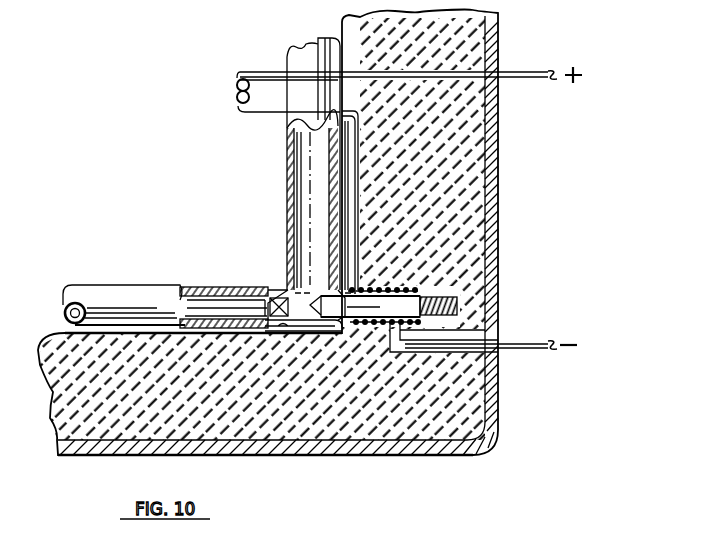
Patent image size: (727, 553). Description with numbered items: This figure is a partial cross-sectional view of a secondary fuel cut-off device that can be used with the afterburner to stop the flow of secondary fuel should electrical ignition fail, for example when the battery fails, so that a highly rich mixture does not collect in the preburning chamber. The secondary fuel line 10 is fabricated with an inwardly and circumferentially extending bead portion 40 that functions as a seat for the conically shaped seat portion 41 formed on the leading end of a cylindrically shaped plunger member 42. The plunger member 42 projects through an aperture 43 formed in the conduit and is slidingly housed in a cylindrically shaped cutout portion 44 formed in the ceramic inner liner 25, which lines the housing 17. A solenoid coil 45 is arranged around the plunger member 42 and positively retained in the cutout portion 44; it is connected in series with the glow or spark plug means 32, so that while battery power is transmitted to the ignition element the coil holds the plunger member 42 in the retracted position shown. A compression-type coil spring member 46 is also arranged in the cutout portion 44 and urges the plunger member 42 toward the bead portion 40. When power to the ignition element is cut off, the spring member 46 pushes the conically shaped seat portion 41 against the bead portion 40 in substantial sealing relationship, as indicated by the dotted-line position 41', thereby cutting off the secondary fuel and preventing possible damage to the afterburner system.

The secondary fuel line 10 is at (107, 292).
The housing 17 is at (499, 198).
The ceramic inner liner 25 is at (118, 417).
The glow or spark plug means 32 is at (240, 82).
The bead portion 40 is at (222, 287).
The conically shaped seat portion 41 is at (290, 332).
The conically shaped seat portion (closed position) 41' is at (292, 343).
The plunger member 42 is at (348, 330).
The aperture 43 is at (322, 290).
The cutout portion 44 is at (423, 290).
The solenoid coil 45 is at (392, 288).
The coil spring member 46 is at (447, 297).